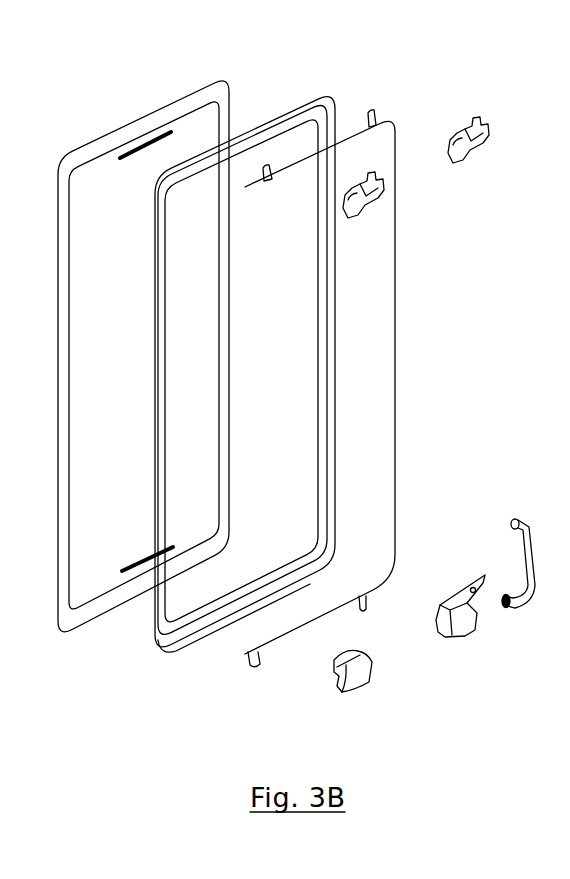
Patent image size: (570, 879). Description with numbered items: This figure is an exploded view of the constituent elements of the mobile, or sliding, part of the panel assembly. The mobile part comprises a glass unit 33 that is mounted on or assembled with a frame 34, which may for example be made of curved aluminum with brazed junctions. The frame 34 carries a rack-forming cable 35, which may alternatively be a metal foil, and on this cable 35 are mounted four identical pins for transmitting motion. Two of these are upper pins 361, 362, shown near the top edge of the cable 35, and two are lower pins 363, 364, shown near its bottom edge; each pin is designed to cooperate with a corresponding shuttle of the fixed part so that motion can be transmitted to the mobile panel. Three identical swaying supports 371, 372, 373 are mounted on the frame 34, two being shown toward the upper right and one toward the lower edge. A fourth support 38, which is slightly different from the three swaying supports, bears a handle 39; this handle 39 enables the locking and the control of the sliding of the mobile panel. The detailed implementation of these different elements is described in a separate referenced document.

The glass unit 33 is at (100, 197).
The frame 34 is at (298, 105).
The rack-forming cable 35 is at (397, 277).
The upper pin 361 is at (267, 163).
The upper pin 362 is at (372, 110).
The lower pin 363 is at (255, 662).
The lower pin 364 is at (365, 612).
The swaying support 371 is at (363, 197).
The swaying support 372 is at (477, 120).
The swaying support 373 is at (353, 677).
The fourth support 38 is at (461, 628).
The handle 39 is at (520, 512).